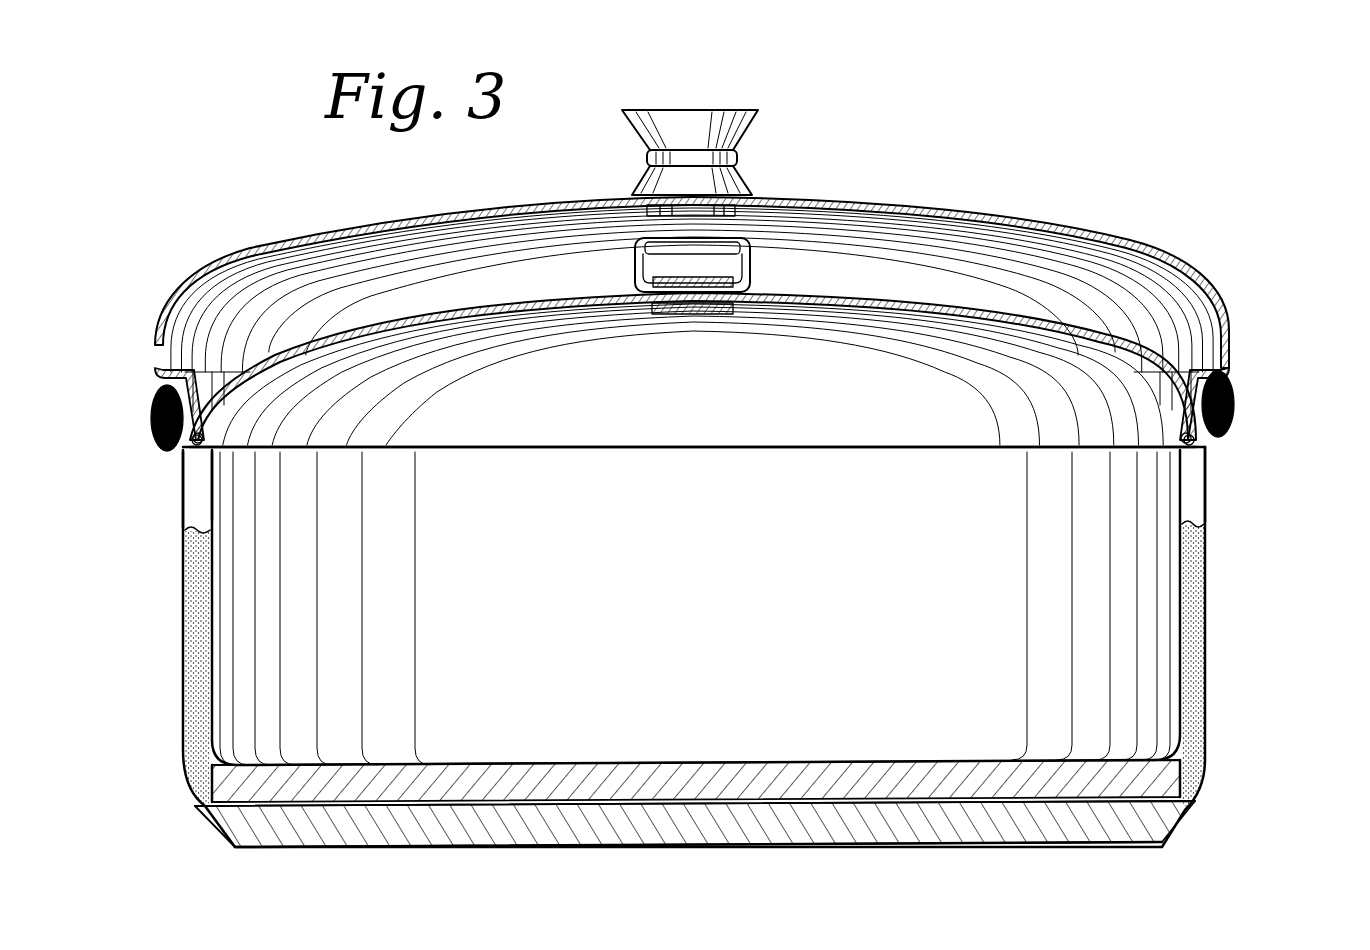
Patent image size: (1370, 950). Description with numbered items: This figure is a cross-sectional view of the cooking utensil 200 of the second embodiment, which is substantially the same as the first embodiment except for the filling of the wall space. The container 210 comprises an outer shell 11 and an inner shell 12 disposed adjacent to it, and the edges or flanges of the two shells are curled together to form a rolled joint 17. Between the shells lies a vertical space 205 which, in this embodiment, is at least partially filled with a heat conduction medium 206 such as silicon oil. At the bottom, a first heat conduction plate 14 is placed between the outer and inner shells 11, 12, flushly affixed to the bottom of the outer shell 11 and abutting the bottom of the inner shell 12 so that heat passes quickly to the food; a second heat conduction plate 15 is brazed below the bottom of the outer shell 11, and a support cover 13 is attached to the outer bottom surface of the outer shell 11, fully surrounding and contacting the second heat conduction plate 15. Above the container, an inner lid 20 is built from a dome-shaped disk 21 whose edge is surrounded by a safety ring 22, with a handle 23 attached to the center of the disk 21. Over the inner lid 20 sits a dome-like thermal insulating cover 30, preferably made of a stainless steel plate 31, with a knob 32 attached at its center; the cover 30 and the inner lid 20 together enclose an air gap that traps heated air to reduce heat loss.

The cooking utensil 200 is at (1147, 190).
The thermal insulating cover 30 is at (1191, 249).
The stainless steel plate 31 is at (905, 194).
The knob 32 is at (690, 130).
The inner lid 20 is at (914, 328).
The dome-shaped disk 21 is at (897, 289).
The safety ring 22 is at (1113, 438).
The handle 23 is at (752, 258).
The rolled joint 17 is at (1238, 393).
The pot assembly 210 is at (1264, 618).
The outer shell 11 is at (195, 615).
The inner shell 12 is at (207, 512).
The support cover 13 is at (958, 848).
The first heat conduction plate 14 is at (478, 782).
The second heat conduction plate 15 is at (1048, 822).
The vertical space 205 is at (195, 478).
The heat conduction medium 206 is at (200, 703).